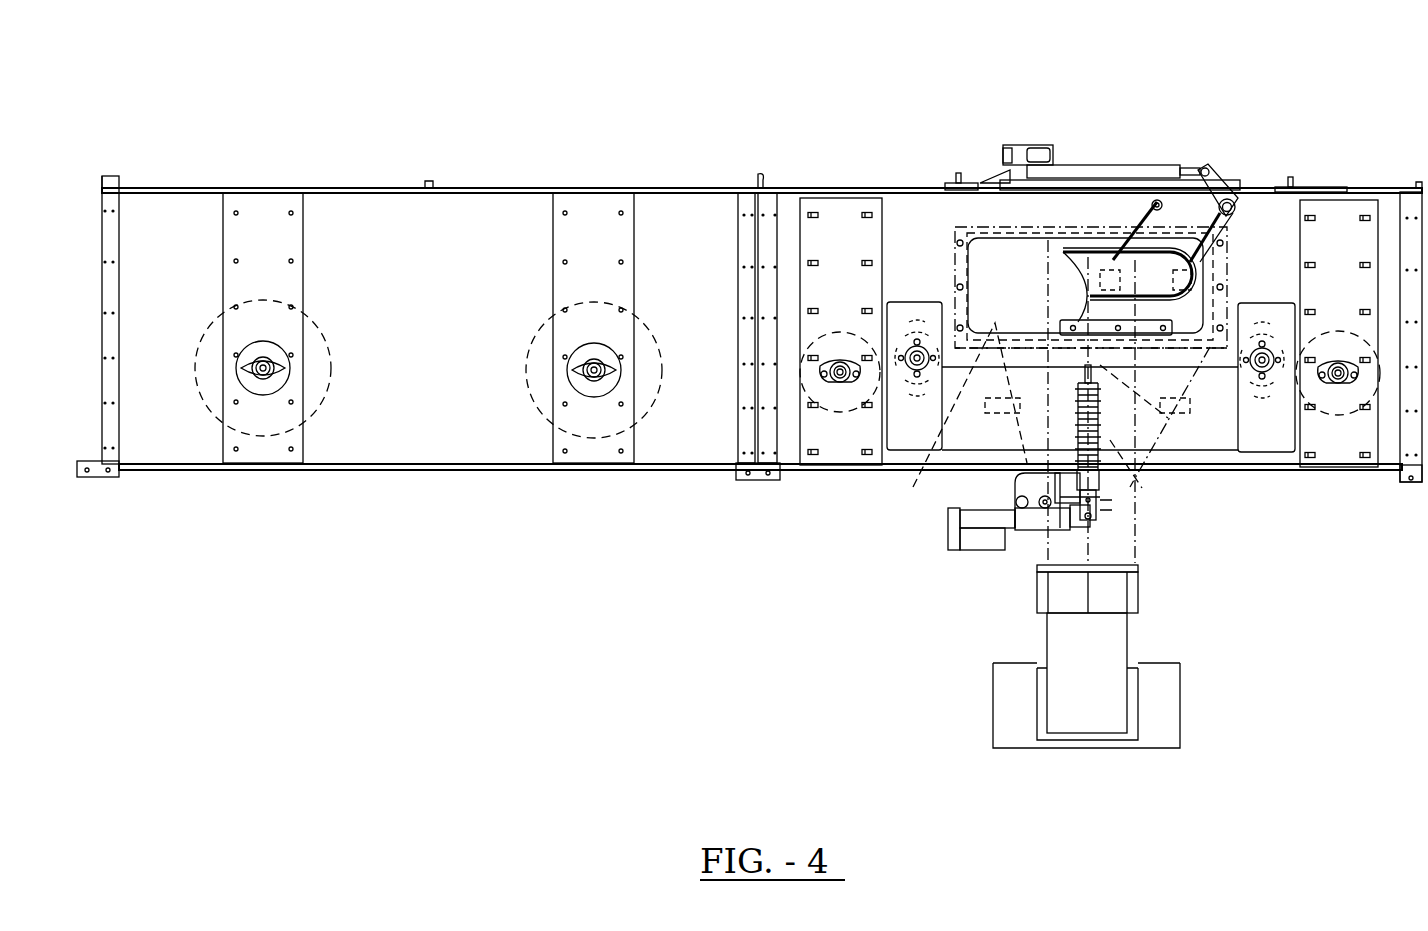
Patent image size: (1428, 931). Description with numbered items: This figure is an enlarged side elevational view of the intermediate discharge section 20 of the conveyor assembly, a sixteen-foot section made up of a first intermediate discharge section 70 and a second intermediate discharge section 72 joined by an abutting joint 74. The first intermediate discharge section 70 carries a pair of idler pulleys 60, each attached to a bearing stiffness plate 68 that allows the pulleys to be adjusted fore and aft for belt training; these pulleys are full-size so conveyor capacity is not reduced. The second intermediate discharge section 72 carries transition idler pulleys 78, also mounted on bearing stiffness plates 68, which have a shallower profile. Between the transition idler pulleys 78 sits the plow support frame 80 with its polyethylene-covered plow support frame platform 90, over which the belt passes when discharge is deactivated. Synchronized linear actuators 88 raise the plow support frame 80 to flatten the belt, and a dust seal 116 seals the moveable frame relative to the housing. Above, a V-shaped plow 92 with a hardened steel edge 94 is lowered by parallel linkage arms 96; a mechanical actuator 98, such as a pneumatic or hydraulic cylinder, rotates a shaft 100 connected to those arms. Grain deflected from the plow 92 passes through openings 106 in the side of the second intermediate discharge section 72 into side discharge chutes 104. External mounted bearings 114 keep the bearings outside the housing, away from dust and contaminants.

The intermediate discharge section 20 is at (1160, 82).
The idler pulley 60 is at (267, 428).
The bearing stiffness plate 68 is at (592, 452).
The first intermediate discharge section 70 is at (400, 447).
The second intermediate discharge section 72 is at (455, 203).
The abutting joint 74 is at (748, 481).
The transition idler pulley 78 is at (840, 406).
The plow support frame 80 is at (1257, 437).
The linear actuator 88 is at (1100, 432).
The plow support frame platform 90 is at (1000, 511).
The V-shaped plow 92 is at (1097, 263).
The hardened steel edge 94 is at (1092, 325).
The parallel linkage arm 96 is at (1222, 232).
The mechanical actuator 98 is at (1042, 145).
The shaft 100 is at (1230, 200).
The side discharge chute 104 is at (1103, 637).
The opening 106 is at (1003, 255).
The external mounted bearing 114 is at (603, 378).
The dust seal 116 is at (903, 298).